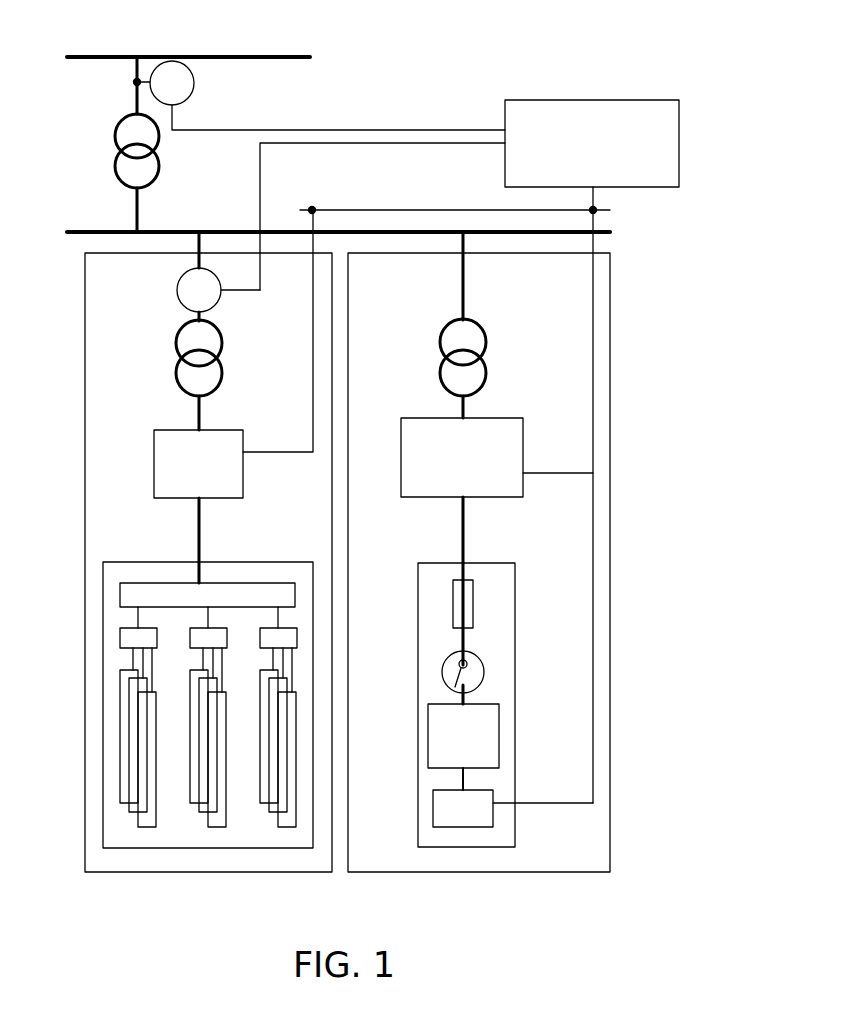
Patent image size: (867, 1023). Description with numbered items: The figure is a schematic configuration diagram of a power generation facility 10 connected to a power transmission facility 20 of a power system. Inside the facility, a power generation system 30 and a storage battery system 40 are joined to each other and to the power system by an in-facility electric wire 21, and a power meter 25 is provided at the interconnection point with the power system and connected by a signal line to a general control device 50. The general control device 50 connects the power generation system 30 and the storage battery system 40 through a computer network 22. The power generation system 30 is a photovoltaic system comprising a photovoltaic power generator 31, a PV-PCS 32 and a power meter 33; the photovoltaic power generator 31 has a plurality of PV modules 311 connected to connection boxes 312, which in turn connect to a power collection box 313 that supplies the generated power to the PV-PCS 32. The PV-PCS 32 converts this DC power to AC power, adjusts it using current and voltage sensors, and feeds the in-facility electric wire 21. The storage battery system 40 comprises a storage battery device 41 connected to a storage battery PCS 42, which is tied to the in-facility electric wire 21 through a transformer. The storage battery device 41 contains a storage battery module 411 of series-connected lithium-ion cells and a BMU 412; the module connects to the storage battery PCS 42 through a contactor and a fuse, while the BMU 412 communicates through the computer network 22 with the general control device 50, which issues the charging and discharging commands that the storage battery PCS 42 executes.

The power generation facility 10 is at (525, 86).
The power transmission facility 20 is at (160, 57).
The in-facility electric wire 21 is at (228, 230).
The computer network 22 is at (445, 208).
The power meter 25 is at (194, 83).
The power generation system 30 is at (208, 872).
The photovoltaic power generator 31 is at (178, 562).
The PV-PCS 32 is at (243, 485).
The power meter 33 is at (177, 292).
The storage battery system 40 is at (473, 872).
The storage battery device 41 is at (430, 562).
The storage battery PCS 42 is at (523, 449).
The general control device 50 is at (679, 142).
The PV module 311 is at (120, 752).
The connection box 312 is at (120, 639).
The power collection box 313 is at (120, 594).
The storage battery module 411 is at (428, 731).
The BMU 412 is at (433, 809).